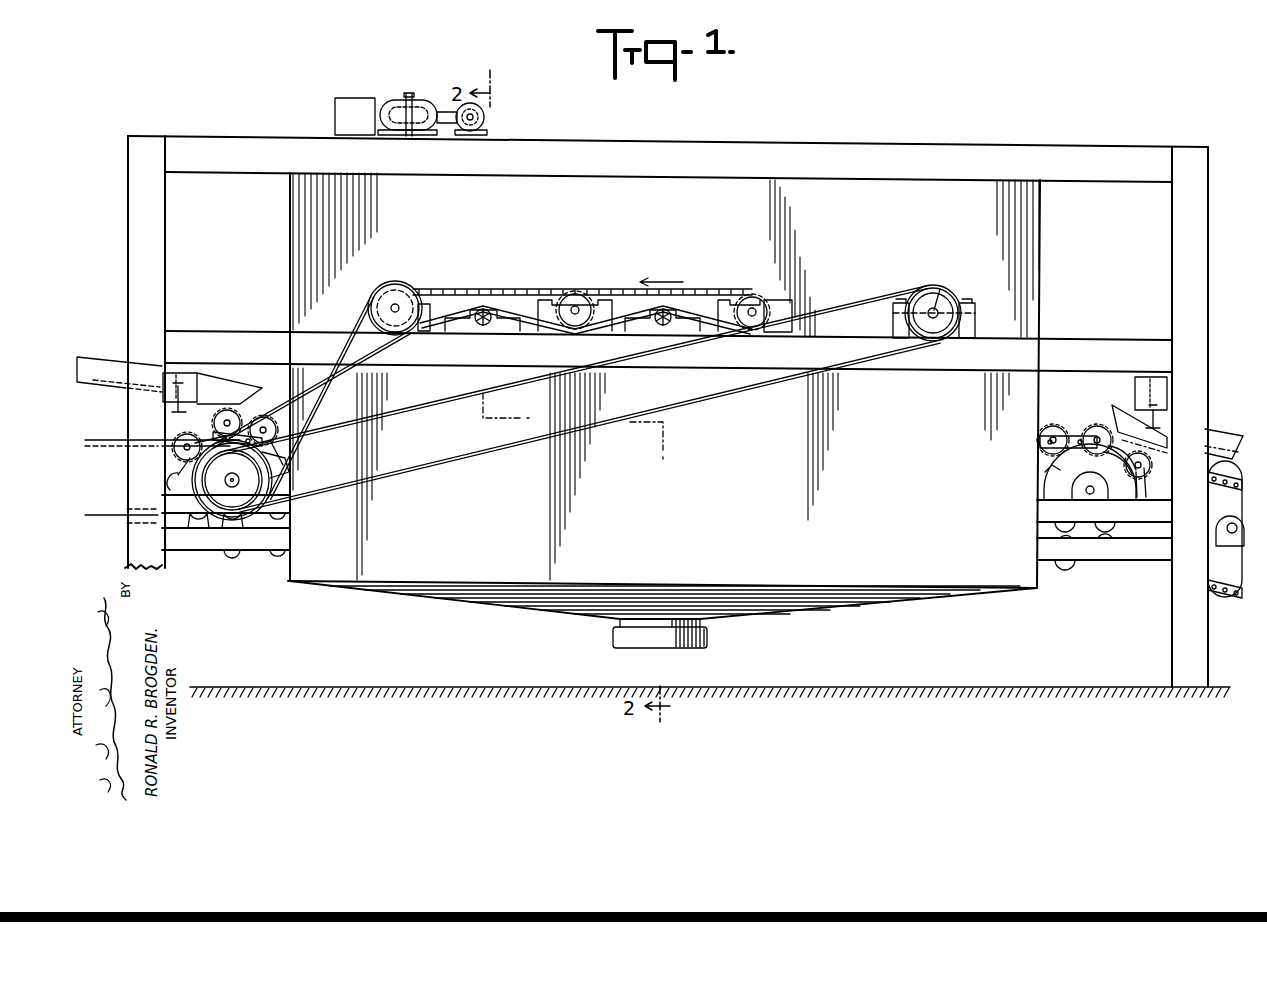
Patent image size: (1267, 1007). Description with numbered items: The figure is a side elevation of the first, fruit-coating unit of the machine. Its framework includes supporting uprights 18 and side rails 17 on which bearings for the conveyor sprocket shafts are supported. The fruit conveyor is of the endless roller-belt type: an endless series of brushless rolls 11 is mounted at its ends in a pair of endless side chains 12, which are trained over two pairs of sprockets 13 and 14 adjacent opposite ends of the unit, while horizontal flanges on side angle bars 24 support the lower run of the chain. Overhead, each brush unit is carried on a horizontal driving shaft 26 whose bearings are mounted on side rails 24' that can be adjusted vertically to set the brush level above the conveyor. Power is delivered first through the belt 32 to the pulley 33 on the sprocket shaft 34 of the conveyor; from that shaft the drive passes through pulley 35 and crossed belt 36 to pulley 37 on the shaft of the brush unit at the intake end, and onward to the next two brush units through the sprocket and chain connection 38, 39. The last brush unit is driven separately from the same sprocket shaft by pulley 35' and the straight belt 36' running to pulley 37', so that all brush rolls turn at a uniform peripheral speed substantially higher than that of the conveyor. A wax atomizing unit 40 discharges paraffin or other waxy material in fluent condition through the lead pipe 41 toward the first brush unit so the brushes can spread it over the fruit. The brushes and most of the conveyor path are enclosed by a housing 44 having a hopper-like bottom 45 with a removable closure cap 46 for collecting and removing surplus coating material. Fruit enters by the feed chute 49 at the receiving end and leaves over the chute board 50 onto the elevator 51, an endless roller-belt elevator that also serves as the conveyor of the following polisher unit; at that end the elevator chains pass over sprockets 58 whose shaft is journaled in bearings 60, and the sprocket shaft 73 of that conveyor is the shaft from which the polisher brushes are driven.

The rolls 11 is at (220, 416).
The endless side chains 12 is at (264, 416).
The sprockets 13 is at (284, 466).
The sprockets 14 is at (1038, 483).
The side rails 17 is at (162, 502).
The uprights 18 is at (128, 247).
The side angle bars 24 is at (667, 552).
The side rails 24' is at (668, 342).
The driving shaft 26 is at (568, 339).
The belt 32 is at (102, 445).
The pulley 33 is at (210, 515).
The sprocket shaft 34 is at (240, 482).
The pulley 35 is at (220, 480).
The pulley 35' is at (262, 480).
The crossed belt 36 is at (311, 397).
The straight belt 36' is at (582, 399).
The pulley 37 is at (374, 308).
The pulley 37' is at (928, 303).
The sprocket 38 is at (415, 283).
The chain 39 is at (488, 288).
The wax atomizing unit 40 is at (431, 98).
The lead pipe 41 is at (398, 100).
The housing 44 is at (909, 221).
The hopper bottom 45 is at (782, 600).
The removable closure cap 46 is at (614, 634).
The feed chute 49 is at (100, 386).
The chute board 50 is at (1126, 400).
The elevator 51 is at (1212, 592).
The sprockets 58 is at (1215, 515).
The bearings 60 is at (1225, 535).
The sprocket shaft 73 is at (1238, 520).